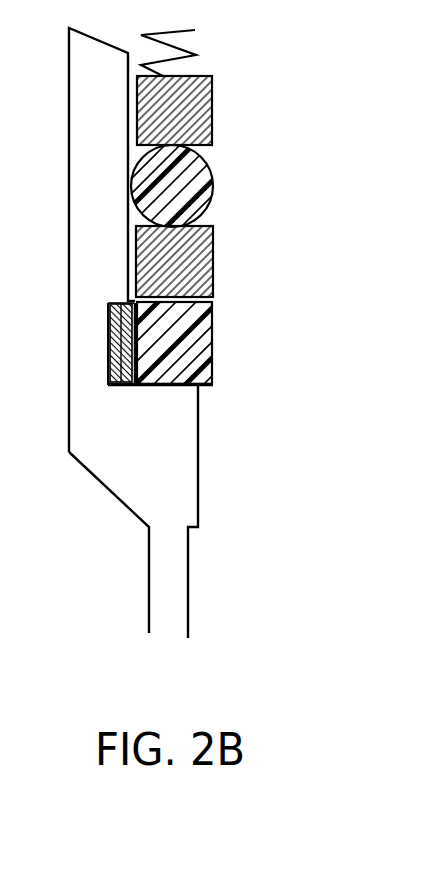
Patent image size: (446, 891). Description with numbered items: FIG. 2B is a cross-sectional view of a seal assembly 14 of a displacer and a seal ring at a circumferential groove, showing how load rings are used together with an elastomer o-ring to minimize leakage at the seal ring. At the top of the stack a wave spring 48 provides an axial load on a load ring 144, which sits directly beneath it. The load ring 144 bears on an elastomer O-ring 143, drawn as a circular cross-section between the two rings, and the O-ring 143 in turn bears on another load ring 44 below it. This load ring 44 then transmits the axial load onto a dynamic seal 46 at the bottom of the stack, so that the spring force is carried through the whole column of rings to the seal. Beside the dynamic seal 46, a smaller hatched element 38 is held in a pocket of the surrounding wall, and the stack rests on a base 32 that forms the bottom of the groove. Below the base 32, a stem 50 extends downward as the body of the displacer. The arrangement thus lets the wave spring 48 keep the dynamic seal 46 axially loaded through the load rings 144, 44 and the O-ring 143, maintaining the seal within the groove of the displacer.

The sensor assembly 14 is at (275, 187).
The base plate 32 is at (200, 387).
The electrode 38 is at (110, 360).
The load ring 44 is at (213, 258).
The dynamic seal 46 is at (212, 343).
The wave spring 48 is at (190, 49).
The support shaft 50 is at (198, 483).
The elastomer O-ring 143 is at (215, 172).
The load ring 144 is at (212, 110).